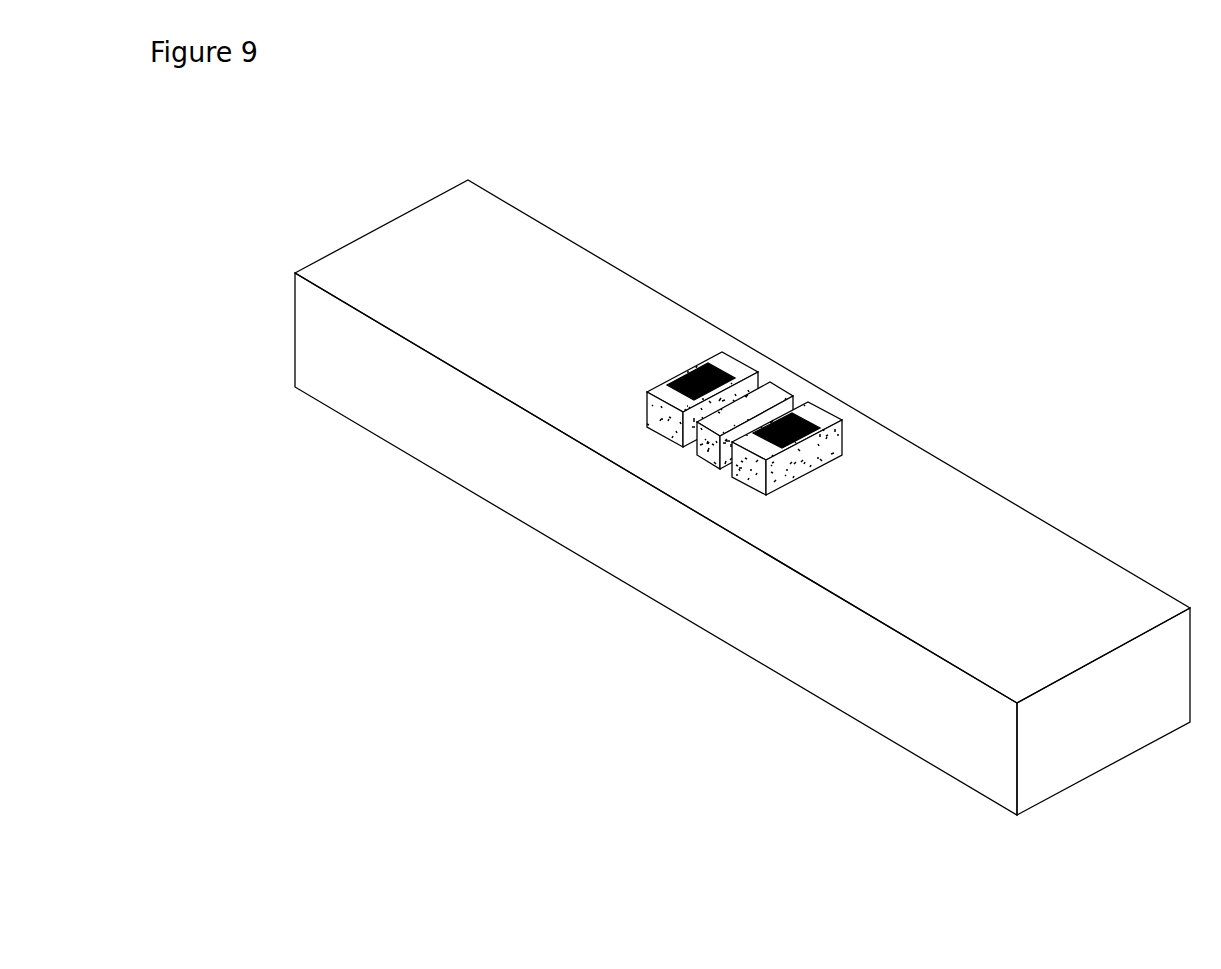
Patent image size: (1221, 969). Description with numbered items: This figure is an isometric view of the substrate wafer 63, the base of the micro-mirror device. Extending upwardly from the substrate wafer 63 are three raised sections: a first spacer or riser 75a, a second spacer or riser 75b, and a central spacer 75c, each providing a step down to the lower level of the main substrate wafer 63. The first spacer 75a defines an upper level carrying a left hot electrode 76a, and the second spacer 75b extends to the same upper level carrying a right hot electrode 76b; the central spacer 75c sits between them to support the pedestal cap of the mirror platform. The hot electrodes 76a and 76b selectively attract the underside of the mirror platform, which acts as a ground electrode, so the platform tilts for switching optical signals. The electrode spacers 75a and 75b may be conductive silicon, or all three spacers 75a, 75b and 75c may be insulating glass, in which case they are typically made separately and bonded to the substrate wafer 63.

The substrate wafer 63 is at (371, 372).
The first spacer or riser 75a is at (735, 368).
The second spacer or riser 75b is at (822, 410).
The central spacer 75c is at (776, 383).
The left hot electrode 76a is at (692, 370).
The right hot electrode 76b is at (815, 440).